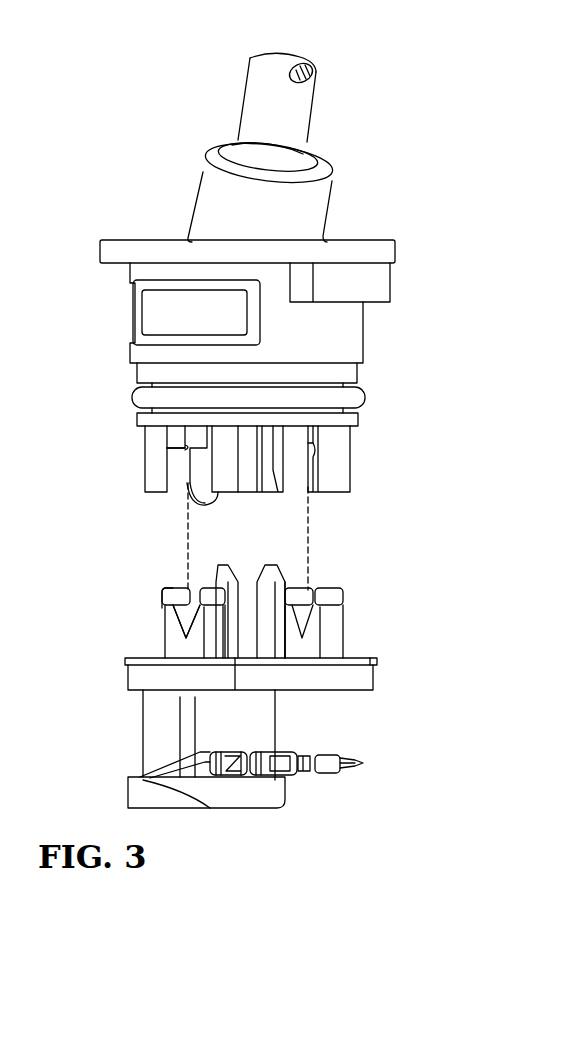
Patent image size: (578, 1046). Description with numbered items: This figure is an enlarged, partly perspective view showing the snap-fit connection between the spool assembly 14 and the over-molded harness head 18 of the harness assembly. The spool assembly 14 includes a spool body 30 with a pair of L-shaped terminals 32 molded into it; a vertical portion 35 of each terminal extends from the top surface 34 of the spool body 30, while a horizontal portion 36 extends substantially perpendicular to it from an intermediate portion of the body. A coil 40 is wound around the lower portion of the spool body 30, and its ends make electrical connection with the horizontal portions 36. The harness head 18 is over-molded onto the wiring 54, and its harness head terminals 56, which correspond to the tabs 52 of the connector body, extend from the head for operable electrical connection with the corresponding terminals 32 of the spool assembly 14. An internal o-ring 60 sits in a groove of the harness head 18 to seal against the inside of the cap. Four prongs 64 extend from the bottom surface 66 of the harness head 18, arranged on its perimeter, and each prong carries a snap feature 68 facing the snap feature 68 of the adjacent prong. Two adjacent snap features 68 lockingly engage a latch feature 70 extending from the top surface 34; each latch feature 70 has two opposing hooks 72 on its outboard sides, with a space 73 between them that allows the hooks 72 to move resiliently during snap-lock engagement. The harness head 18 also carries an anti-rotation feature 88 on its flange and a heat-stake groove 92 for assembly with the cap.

The spool assembly 14 is at (352, 805).
The harness head 18 is at (432, 160).
The spool body 30 is at (145, 707).
The L-shaped terminals 32 is at (265, 567).
The top surface 34 is at (370, 658).
The vertical portion 35 is at (298, 585).
The horizontal portion 36 is at (360, 765).
The coil 40 is at (140, 777).
The tabs 52 is at (278, 752).
The wiring 54 is at (253, 93).
The harness head terminals 56 is at (277, 468).
The internal o-ring 60 is at (360, 388).
The prongs 64 is at (173, 490).
The bottom surface 66 is at (355, 432).
The snap feature 68 is at (175, 442).
The latch feature 70 is at (165, 618).
The hooks 72 is at (163, 592).
The space 73 is at (183, 592).
The anti-rotation feature 88 is at (382, 280).
The heat-stake groove 92 is at (140, 307).